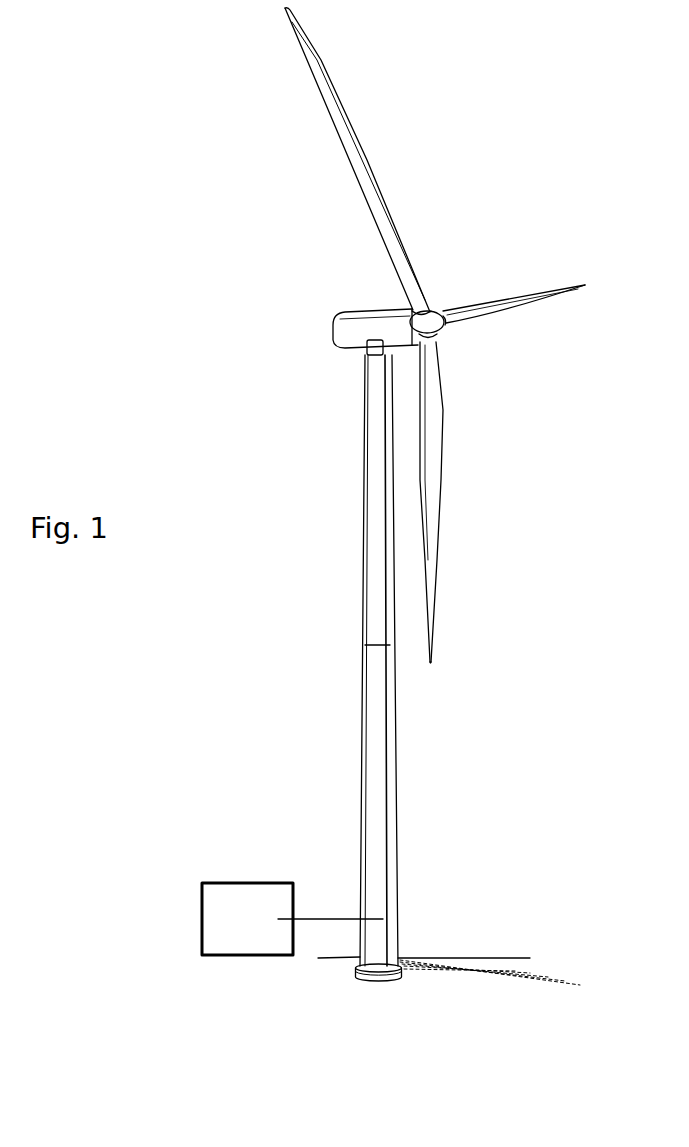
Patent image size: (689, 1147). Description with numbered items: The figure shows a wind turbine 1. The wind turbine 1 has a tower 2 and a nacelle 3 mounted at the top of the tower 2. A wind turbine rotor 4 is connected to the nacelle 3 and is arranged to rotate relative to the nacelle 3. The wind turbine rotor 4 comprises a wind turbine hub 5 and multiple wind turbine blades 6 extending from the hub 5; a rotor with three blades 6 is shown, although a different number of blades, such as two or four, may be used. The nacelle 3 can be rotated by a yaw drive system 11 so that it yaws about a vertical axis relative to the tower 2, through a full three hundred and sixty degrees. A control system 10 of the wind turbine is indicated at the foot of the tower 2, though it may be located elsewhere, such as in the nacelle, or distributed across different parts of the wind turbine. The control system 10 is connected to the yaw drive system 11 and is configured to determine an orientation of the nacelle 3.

The wind turbine 1 is at (517, 176).
The tower 2 is at (368, 536).
The nacelle 3 is at (345, 323).
The wind turbine rotor 4 is at (475, 360).
The wind turbine hub 5 is at (437, 308).
The wind turbine blade 6 is at (343, 137).
The control system 10 is at (223, 912).
The yaw drive system 11 is at (368, 357).